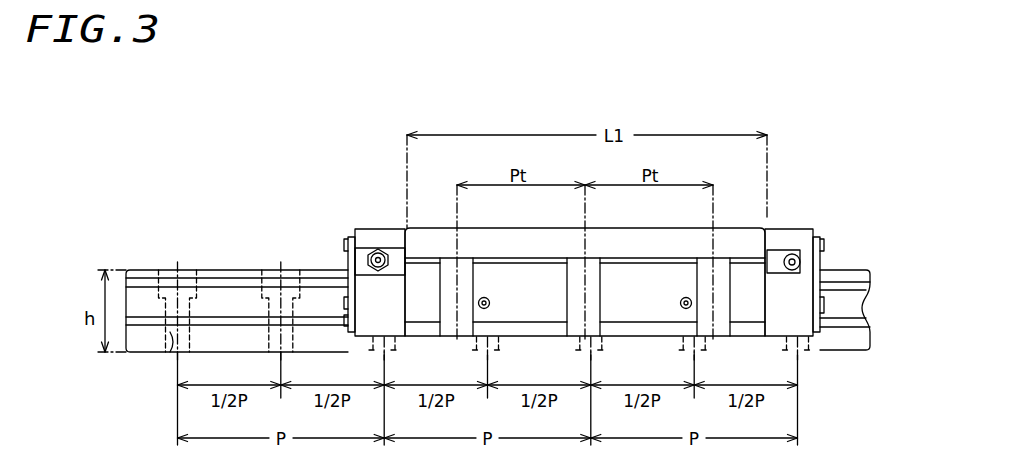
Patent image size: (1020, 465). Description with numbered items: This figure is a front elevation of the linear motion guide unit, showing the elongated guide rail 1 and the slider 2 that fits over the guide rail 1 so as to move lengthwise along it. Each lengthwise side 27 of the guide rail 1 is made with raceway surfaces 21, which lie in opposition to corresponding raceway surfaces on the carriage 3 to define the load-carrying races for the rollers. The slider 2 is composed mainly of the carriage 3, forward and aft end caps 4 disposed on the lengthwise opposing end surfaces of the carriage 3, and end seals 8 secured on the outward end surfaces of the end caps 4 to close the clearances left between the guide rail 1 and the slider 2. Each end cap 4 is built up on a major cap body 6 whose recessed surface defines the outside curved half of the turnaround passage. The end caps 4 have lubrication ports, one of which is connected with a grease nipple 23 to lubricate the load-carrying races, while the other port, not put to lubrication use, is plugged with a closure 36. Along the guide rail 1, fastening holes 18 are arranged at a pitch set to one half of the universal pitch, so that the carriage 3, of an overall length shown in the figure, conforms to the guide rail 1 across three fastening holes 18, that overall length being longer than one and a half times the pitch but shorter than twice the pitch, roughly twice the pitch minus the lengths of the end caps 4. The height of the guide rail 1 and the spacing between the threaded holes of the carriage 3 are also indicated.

The guide rail 1 is at (500, 307).
The slider 2 is at (575, 236).
The carriage 3 is at (432, 242).
The end cap 4 is at (575, 248).
The major cap body 6 is at (368, 243).
The end seal 8 is at (350, 257).
The fastening hole 18 is at (170, 350).
The raceway surface 21 is at (245, 283).
The grease nipple 23 is at (380, 250).
The lengthwise side 27 is at (232, 305).
The closure 36 is at (793, 252).